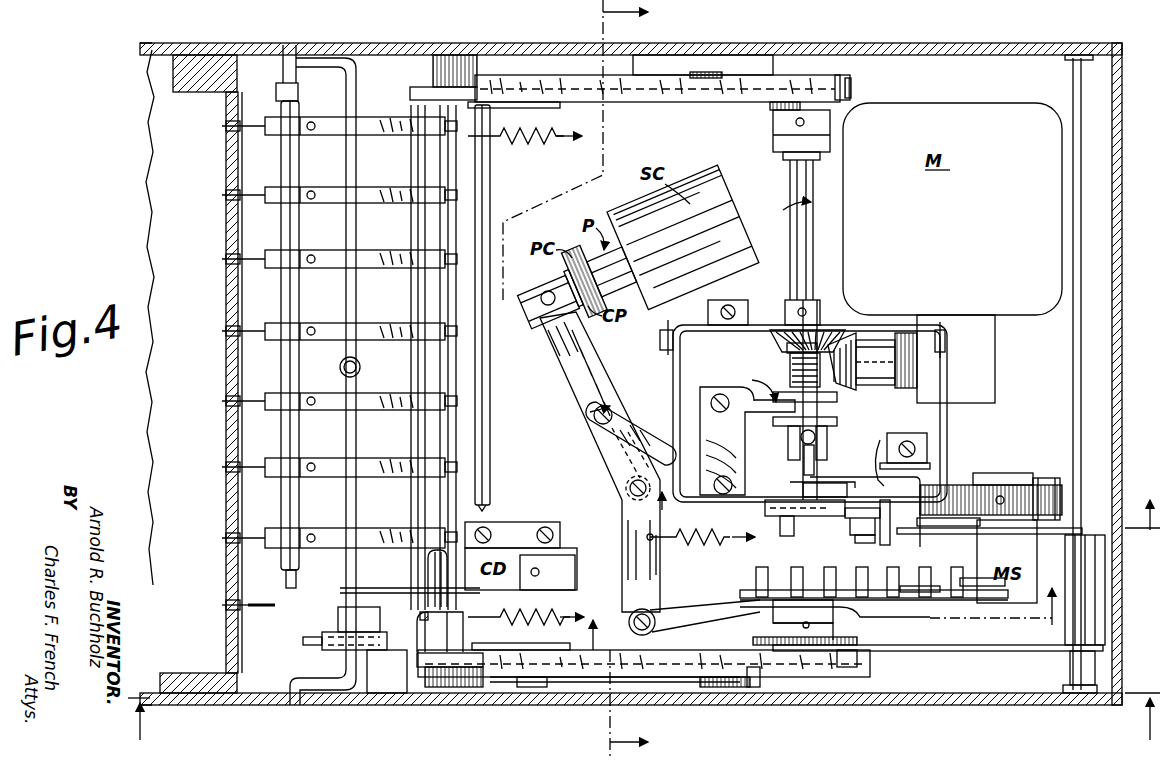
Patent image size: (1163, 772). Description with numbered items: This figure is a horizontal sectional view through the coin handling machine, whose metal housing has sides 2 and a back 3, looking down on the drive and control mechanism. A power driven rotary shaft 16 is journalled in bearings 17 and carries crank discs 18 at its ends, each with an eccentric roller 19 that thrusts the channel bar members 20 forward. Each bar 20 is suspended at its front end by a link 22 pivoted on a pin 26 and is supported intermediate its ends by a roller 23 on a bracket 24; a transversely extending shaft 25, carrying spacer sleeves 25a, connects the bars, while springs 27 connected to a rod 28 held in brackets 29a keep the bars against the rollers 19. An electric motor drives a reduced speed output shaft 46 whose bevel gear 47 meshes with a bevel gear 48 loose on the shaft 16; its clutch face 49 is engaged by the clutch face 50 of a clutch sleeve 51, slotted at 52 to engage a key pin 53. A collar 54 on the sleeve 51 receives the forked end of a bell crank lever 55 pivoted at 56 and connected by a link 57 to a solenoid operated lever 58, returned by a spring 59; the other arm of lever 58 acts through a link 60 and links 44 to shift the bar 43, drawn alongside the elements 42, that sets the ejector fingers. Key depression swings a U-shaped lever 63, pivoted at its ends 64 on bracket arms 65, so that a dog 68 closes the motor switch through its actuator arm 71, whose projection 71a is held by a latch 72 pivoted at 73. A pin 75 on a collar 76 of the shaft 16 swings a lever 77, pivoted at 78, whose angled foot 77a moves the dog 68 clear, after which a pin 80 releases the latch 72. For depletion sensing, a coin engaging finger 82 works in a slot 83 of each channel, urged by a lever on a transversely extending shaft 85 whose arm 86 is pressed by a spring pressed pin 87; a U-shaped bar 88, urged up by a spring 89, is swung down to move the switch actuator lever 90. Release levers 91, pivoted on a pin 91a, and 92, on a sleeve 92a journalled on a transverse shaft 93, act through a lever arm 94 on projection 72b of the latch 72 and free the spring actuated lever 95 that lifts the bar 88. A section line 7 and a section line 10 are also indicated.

The sides 2 is at (930, 46).
The back 3 is at (1110, 107).
The pivot / section line 7 is at (648, 493).
The section line 10 is at (827, 606).
The power driven rotary shaft 16 is at (790, 182).
The bearings 17 is at (784, 148).
The crank discs 18 is at (770, 106).
The roller 19 is at (843, 98).
The channel bar members 20 is at (701, 102).
The link 22 is at (428, 90).
The roller 23 is at (715, 72).
The bracket 24 is at (678, 54).
The transversely extending shaft 25 is at (427, 580).
The spacer sleeves 25a is at (425, 438).
The pin 26 is at (476, 56).
The springs 27 is at (540, 142).
The transversely disposed shaft 28 is at (488, 472).
The brackets 29a is at (558, 110).
The contact 42 is at (762, 568).
The bar 43 is at (988, 602).
The links 44 is at (700, 608).
The reduced speed output shaft 46 is at (883, 381).
The bevel gear 47 is at (860, 350).
The bevel gear 48 is at (772, 334).
The clutch face 49 is at (787, 349).
The clutch face 50 is at (790, 370).
The clutch sleeve 51 is at (787, 436).
The slot 52 is at (817, 438).
The key pin 53 is at (812, 443).
The collar 54 is at (834, 417).
The bell crank lever 55 is at (751, 385).
The pivot 56 is at (715, 400).
The link 57 is at (670, 432).
The solenoid operated lever 58 is at (573, 384).
The spring 59 is at (708, 548).
The link 60 is at (732, 628).
The U-shaped lever 63 is at (946, 414).
The ends 64 is at (665, 340).
The bracket arms 65 is at (917, 356).
The dog 68 is at (888, 515).
The actuator arm 71 is at (956, 483).
The projection 71a is at (895, 451).
The latch 72 is at (868, 470).
The projection 72b is at (912, 522).
The pivot 73 is at (920, 450).
The pin 75 is at (780, 530).
The collar 76 is at (766, 510).
The lever 77 is at (865, 520).
The angled foot 77a is at (800, 489).
The pivot 78 is at (859, 547).
The pin 80 is at (816, 462).
The coin engaging finger 82 is at (262, 116).
The slot 83 is at (226, 126).
The transversely extending shaft 85 is at (293, 578).
The arm 86 is at (379, 193).
The spring pressed pin 87 is at (313, 193).
The U-shaped bar 88 is at (359, 299).
The spring 89 is at (360, 368).
The switch actuator lever 90 is at (393, 590).
The lever 91 is at (596, 684).
The pin 91a is at (538, 688).
The lever 92 is at (984, 648).
The sleeve 92a is at (1065, 628).
The transverse shaft 93 is at (1073, 372).
The lever arm 94 is at (1024, 533).
The spring actuated lever 95 is at (304, 636).